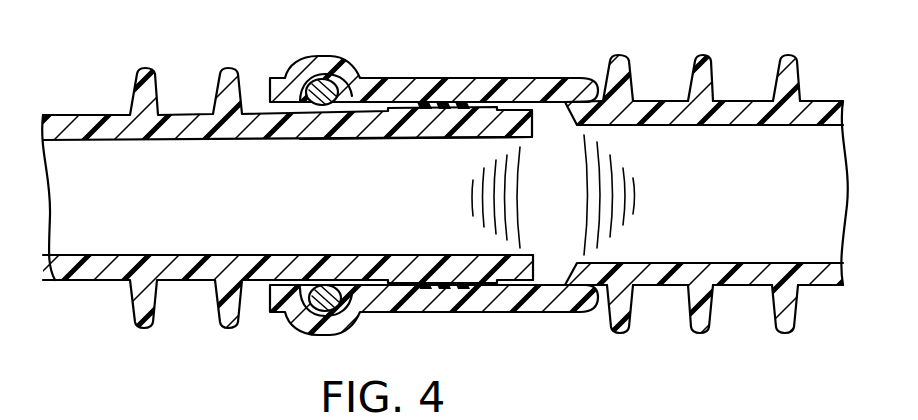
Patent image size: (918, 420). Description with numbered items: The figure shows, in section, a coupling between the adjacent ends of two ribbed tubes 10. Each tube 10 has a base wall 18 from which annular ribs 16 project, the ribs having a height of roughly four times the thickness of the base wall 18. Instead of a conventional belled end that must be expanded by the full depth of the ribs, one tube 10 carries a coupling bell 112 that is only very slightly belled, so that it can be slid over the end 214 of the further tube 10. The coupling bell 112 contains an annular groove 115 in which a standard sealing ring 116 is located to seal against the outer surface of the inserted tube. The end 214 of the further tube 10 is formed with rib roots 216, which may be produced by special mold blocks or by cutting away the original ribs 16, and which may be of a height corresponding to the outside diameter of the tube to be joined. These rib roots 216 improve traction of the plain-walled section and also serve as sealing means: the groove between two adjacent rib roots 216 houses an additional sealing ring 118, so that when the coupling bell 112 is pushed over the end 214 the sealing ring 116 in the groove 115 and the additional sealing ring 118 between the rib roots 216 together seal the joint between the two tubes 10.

The ribbed tube 10 is at (454, 189).
The ribs 16 is at (789, 80).
The base wall 18 is at (118, 142).
The coupling bell 112 is at (550, 77).
The annular groove 115 is at (297, 86).
The sealing ring 116 is at (330, 80).
The additional sealing ring 118 is at (425, 139).
The end of further tube 214 is at (375, 141).
The rib roots 216 is at (395, 112).